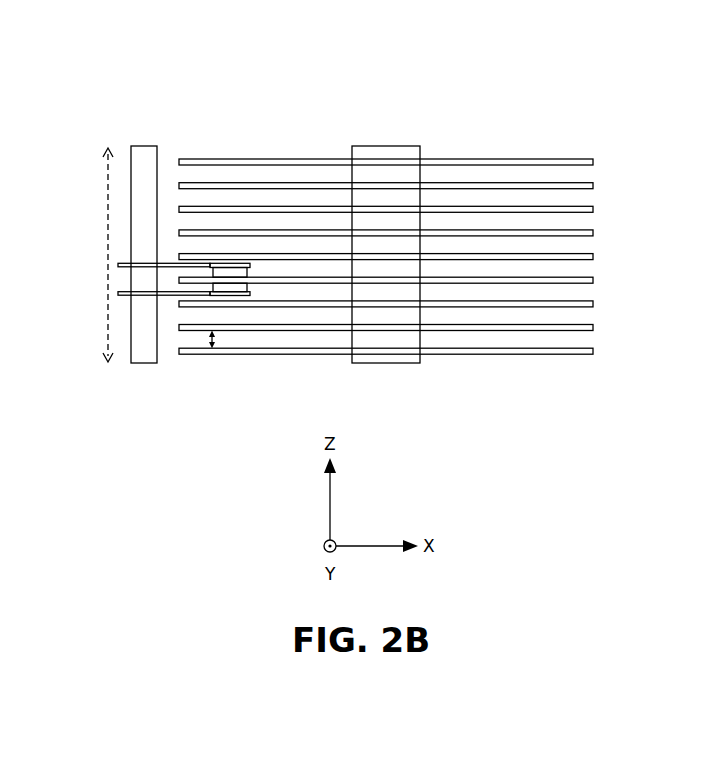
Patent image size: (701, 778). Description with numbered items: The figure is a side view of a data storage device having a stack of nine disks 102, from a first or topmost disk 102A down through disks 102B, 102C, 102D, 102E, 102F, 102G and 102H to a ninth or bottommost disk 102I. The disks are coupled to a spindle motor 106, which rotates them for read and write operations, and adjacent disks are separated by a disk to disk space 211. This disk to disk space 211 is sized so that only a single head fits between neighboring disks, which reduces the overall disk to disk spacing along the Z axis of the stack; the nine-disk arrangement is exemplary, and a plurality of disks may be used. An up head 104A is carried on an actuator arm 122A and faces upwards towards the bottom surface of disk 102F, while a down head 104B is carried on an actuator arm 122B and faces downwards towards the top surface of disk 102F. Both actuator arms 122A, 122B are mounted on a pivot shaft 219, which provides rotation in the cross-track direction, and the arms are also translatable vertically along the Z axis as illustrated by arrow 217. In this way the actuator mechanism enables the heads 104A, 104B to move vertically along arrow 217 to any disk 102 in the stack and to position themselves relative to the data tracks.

The disk 102 is at (576, 102).
The topmost disk 102A is at (593, 162).
The disk 102B is at (593, 186).
The disk 102C is at (593, 209).
The disk 102D is at (593, 233).
The disk 102E is at (593, 257).
The disk 102F is at (593, 280).
The disk 102G is at (593, 304).
The disk 102H is at (593, 328).
The bottommost disk 102I is at (593, 351).
The up head 104A is at (252, 296).
The down head 104B is at (252, 272).
The spindle motor 106 is at (390, 146).
The actuator arm 122A is at (103, 294).
The actuator arm 122B is at (103, 265).
The disk to disk space 211 is at (210, 338).
The arrow 217 is at (107, 182).
The pivot shaft 219 is at (145, 146).